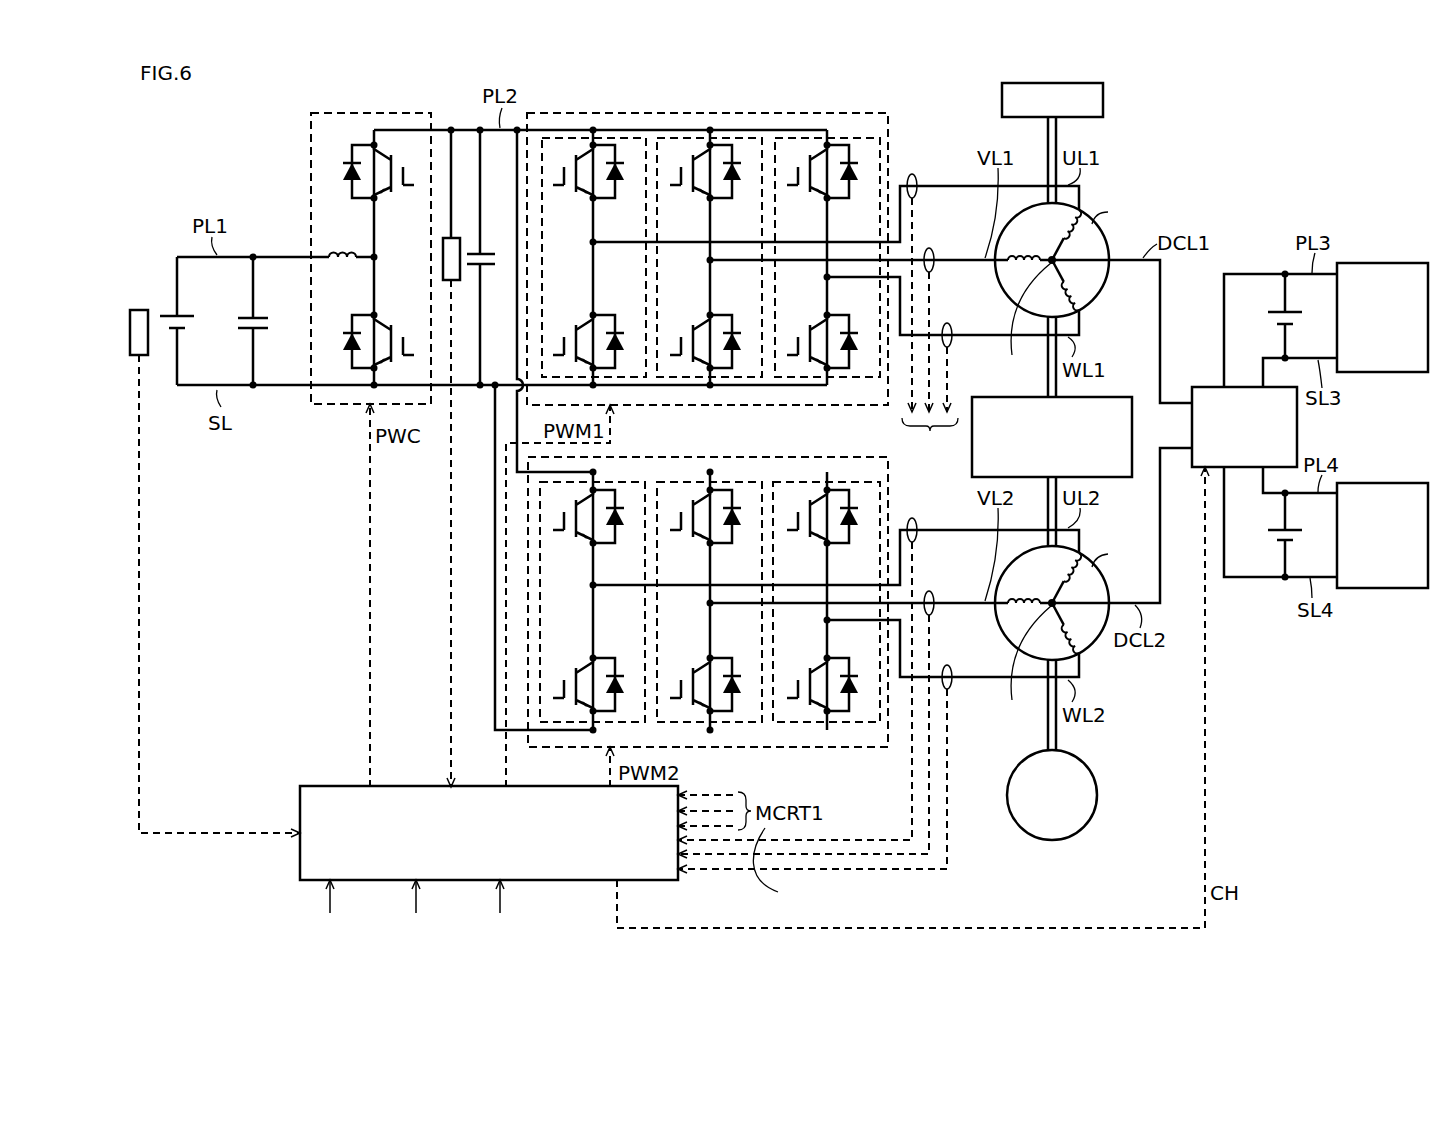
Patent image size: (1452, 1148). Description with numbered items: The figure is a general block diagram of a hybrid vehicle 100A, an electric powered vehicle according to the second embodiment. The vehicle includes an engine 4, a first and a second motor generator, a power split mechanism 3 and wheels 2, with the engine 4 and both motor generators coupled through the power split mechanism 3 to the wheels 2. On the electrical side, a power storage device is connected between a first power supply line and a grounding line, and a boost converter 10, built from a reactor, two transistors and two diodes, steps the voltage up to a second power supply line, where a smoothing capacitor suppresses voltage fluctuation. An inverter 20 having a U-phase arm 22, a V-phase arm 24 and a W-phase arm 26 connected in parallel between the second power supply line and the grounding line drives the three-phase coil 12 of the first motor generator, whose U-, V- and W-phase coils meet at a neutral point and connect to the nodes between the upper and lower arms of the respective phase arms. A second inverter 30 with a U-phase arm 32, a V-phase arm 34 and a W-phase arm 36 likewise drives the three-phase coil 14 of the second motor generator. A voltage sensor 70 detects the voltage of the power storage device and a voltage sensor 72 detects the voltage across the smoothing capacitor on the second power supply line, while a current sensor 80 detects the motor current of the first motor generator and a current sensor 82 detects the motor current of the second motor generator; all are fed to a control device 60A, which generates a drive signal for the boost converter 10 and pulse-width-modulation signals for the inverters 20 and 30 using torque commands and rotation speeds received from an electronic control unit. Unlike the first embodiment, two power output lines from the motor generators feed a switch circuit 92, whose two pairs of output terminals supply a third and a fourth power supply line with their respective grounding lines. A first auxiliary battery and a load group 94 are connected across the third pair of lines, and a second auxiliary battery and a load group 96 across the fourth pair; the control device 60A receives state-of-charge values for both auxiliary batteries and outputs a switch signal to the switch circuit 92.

The wheels 2 is at (1100, 795).
The power split mechanism 3 is at (1085, 397).
The engine 4 is at (1104, 100).
The boost converter 10 is at (371, 282).
The three-phase coil 12 is at (1068, 226).
The three-phase coil 14 is at (1068, 571).
The inverter 20 is at (803, 258).
The U-phase arm 22 is at (594, 225).
The V-phase arm 24 is at (709, 225).
The W-phase arm 26 is at (827, 225).
The inverter 30 is at (803, 601).
The U-phase arm 32 is at (595, 571).
The V-phase arm 34 is at (710, 571).
The W-phase arm 36 is at (826, 571).
The control device 60A is at (403, 785).
The voltage sensor 70 is at (140, 307).
The voltage sensor 72 is at (450, 237).
The current sensor 80 is at (914, 173).
The current sensor 82 is at (914, 518).
The switch circuit 92 is at (1196, 387).
The load group 94 is at (1383, 262).
The load group 96 is at (1383, 483).
The hybrid vehicle 100A is at (1382, 111).